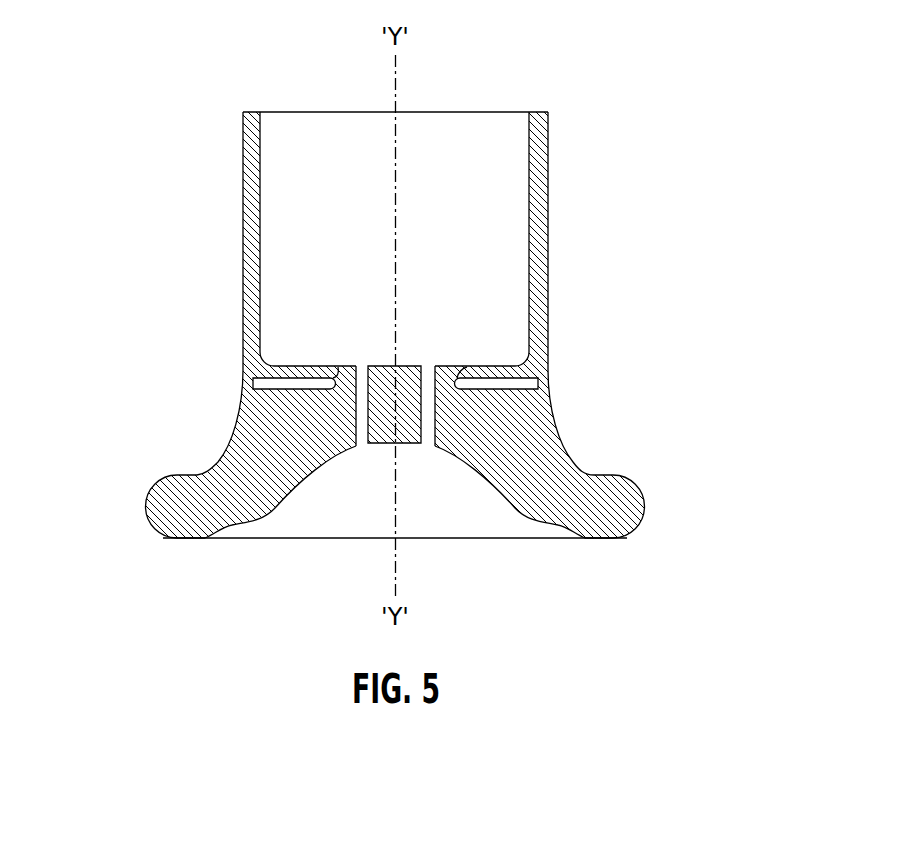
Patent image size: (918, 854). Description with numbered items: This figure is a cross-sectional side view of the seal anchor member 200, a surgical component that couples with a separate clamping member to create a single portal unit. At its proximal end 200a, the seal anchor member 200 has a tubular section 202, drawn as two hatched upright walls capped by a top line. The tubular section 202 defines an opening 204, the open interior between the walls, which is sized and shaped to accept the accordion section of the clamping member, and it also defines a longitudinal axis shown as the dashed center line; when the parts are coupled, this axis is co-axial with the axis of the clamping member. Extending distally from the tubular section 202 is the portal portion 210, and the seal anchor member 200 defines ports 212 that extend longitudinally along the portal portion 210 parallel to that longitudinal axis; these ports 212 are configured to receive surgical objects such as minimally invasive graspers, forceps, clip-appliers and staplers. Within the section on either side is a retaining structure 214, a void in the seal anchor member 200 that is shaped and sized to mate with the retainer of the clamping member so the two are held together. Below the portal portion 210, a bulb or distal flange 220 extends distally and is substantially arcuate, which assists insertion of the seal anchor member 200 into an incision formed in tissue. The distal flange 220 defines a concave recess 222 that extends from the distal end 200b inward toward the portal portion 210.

The seal anchor member 200 is at (600, 47).
The proximal end 200a is at (548, 111).
The distal end 200b is at (147, 525).
The tubular section 202 is at (548, 232).
The opening 204 is at (423, 128).
The portal portion 210 is at (423, 350).
The ports 212 is at (426, 449).
The retaining structure 214 is at (530, 372).
The distal flange 220 is at (573, 452).
The concave recess 222 is at (456, 525).